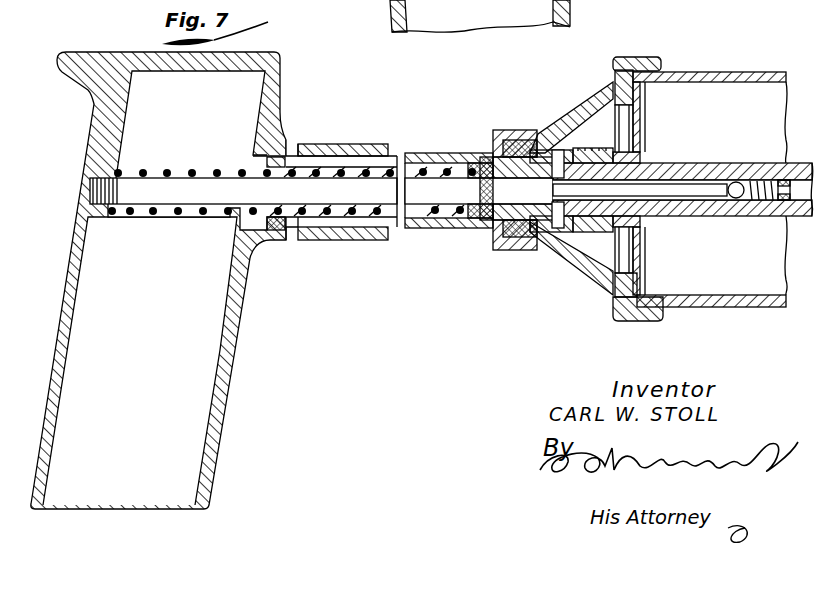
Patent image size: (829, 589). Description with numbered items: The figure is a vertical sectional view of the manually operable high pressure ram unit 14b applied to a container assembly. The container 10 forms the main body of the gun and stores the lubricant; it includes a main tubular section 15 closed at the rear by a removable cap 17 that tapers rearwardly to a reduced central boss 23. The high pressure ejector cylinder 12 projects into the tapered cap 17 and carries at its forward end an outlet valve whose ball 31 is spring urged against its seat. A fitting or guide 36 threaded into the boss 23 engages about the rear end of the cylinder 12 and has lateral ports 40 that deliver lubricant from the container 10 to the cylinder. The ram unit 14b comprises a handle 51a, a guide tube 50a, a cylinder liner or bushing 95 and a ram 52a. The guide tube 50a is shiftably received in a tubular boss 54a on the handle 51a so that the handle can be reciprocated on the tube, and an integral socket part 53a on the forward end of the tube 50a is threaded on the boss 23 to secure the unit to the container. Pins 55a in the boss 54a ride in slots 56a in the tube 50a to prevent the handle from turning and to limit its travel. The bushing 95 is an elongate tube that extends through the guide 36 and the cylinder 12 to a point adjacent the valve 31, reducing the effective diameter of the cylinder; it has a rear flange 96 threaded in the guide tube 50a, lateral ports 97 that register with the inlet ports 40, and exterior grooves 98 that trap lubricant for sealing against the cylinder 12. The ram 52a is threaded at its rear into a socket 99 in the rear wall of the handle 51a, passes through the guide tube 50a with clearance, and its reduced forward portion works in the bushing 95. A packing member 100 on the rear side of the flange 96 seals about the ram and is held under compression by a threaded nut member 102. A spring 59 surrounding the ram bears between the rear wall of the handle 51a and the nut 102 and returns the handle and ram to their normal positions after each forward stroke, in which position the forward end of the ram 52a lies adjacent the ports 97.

The container 10 is at (702, 71).
The high pressure cylinder 12 is at (689, 162).
The main tubular section 15 is at (731, 73).
The rear cap 17 is at (590, 101).
The central boss 23 is at (540, 147).
The ball 31 is at (745, 172).
The guide 36 is at (604, 235).
The lateral ports 40 is at (577, 160).
The guide tube 50a is at (420, 228).
The handle 51a is at (231, 360).
The ram 52a is at (458, 226).
The socket part 53a is at (527, 250).
The tubular boss 54a is at (350, 240).
The pins 55a is at (293, 152).
The slots 56a is at (372, 232).
The spring 59 is at (428, 162).
The cylinder liner or bushing 95 is at (658, 170).
The flange 96 is at (496, 150).
The lateral ports 97 is at (567, 240).
The grooves 98 is at (683, 206).
The socket 99 is at (92, 183).
The packing member 100 is at (498, 250).
The threaded nut member 102 is at (470, 165).
The ram unit 14b is at (366, 141).